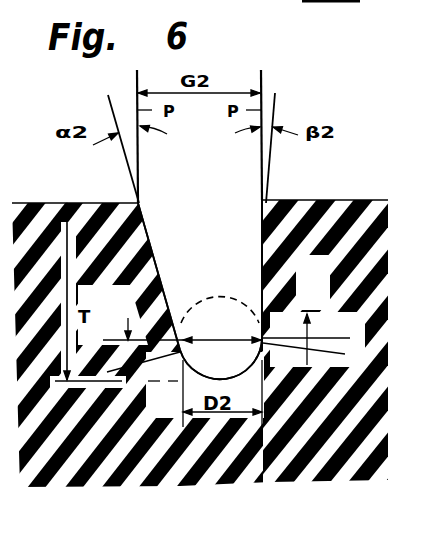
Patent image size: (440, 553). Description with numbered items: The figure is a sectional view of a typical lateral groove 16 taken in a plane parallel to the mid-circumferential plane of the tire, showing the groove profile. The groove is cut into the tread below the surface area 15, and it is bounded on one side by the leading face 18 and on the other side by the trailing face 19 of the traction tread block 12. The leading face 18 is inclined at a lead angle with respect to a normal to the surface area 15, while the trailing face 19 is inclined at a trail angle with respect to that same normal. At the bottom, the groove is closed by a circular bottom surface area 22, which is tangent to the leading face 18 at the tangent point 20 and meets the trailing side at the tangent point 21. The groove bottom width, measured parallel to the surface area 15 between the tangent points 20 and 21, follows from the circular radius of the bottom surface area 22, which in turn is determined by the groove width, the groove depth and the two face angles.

The traction tread block 12 is at (107, 233).
The surface area 15 is at (320, 198).
The lateral groove 16 is at (242, 245).
The leading face 18 is at (150, 230).
The trailing face 19 is at (260, 268).
The tangent point 20 is at (179, 352).
The tangent point 21 is at (263, 343).
The circular bottom surface area 22 is at (233, 370).